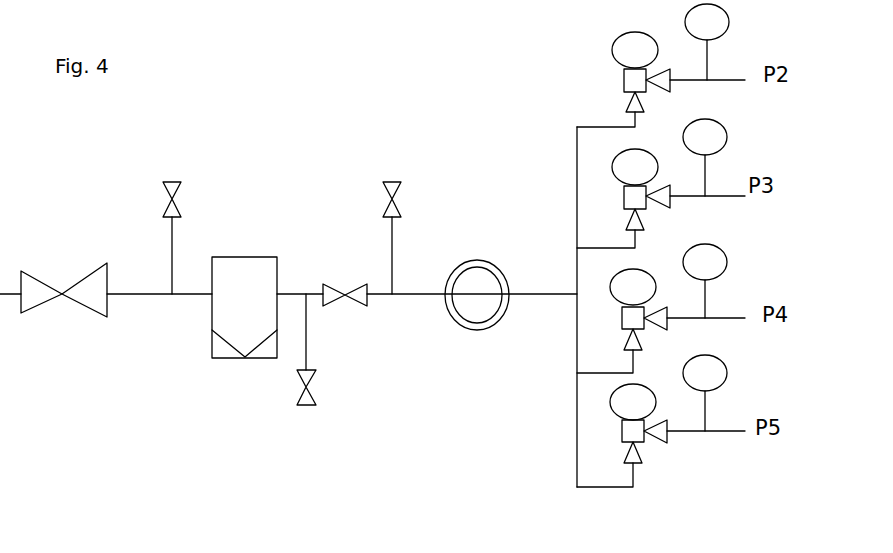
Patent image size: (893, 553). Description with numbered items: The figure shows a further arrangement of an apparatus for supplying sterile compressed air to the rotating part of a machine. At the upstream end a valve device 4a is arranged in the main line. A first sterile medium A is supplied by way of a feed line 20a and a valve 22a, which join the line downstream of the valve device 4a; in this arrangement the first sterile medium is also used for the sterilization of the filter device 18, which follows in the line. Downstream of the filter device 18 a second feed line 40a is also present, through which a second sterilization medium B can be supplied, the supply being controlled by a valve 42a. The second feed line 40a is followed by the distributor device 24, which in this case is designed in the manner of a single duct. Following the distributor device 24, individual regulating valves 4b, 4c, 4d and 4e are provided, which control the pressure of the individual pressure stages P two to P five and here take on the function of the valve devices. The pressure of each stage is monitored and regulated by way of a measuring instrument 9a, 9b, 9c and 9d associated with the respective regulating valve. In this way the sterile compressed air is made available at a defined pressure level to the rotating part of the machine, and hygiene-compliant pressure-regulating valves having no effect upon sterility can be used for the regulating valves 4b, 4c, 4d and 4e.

The valve device 4a is at (95, 293).
The regulating valve 4b is at (631, 65).
The regulating valve 4c is at (633, 183).
The regulating valve 4d is at (632, 308).
The regulating valve 4e is at (625, 421).
The measuring instrument 9a is at (602, 76).
The measuring instrument 9b is at (602, 193).
The measuring instrument 9c is at (598, 314).
The measuring instrument 9d is at (633, 402).
The filter device 18 is at (242, 270).
The feed line 20a is at (175, 193).
The valve 22a is at (172, 250).
The distributor device 24 is at (490, 268).
The second feed line 40a is at (392, 258).
The valve 42a is at (400, 198).